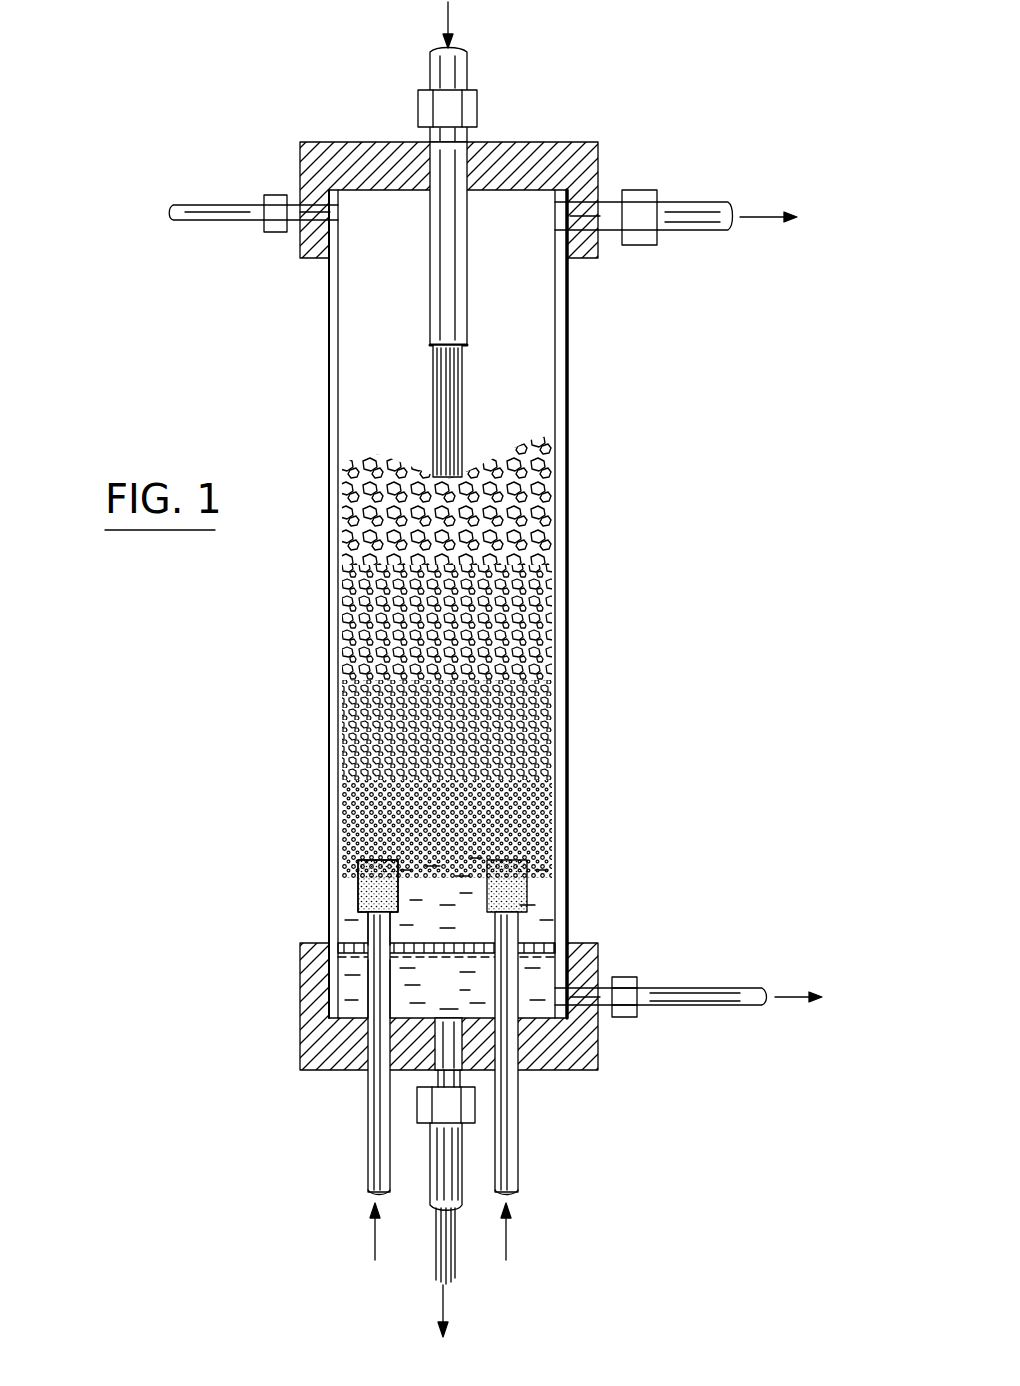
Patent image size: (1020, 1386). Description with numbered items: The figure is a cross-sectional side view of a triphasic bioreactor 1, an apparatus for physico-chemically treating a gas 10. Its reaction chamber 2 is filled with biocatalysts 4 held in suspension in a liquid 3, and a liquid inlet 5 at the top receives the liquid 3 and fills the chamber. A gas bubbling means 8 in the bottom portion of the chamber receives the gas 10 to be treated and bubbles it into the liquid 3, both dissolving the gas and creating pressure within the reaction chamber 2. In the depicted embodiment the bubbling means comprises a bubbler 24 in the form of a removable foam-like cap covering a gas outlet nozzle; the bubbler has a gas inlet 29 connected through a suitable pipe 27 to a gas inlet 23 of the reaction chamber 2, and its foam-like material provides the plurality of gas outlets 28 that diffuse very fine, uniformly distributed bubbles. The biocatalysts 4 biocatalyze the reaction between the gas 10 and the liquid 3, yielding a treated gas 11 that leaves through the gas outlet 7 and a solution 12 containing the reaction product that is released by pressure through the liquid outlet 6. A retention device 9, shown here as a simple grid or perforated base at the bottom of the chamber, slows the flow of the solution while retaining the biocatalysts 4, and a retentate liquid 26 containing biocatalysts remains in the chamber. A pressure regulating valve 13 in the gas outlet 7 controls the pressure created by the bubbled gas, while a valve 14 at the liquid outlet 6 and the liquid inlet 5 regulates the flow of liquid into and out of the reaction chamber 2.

The triphasic bioreactor 1 is at (172, 168).
The reaction chamber 2 is at (570, 519).
The liquid 3 is at (467, 385).
The biocatalysts 4 is at (518, 448).
The liquid inlet 5 is at (462, 50).
The liquid outlet 6 is at (746, 988).
The gas outlet 7 is at (728, 205).
The gas bubbling means 8 is at (357, 888).
The retention device 9 is at (540, 937).
The gas 10 is at (347, 838).
The treated gas 11 is at (530, 335).
The solution containing reaction product 12 is at (455, 1250).
The pressure regulating valve 13 is at (633, 195).
The valve 14 is at (473, 108).
The gas inlet of the reaction chamber 23 is at (365, 1190).
The bubbler 24 is at (357, 868).
The retentate liquid 26 is at (540, 917).
The pipe 27 is at (365, 978).
The gas outlets 28 is at (540, 865).
The gas inlet of the bubbler 29 is at (365, 920).